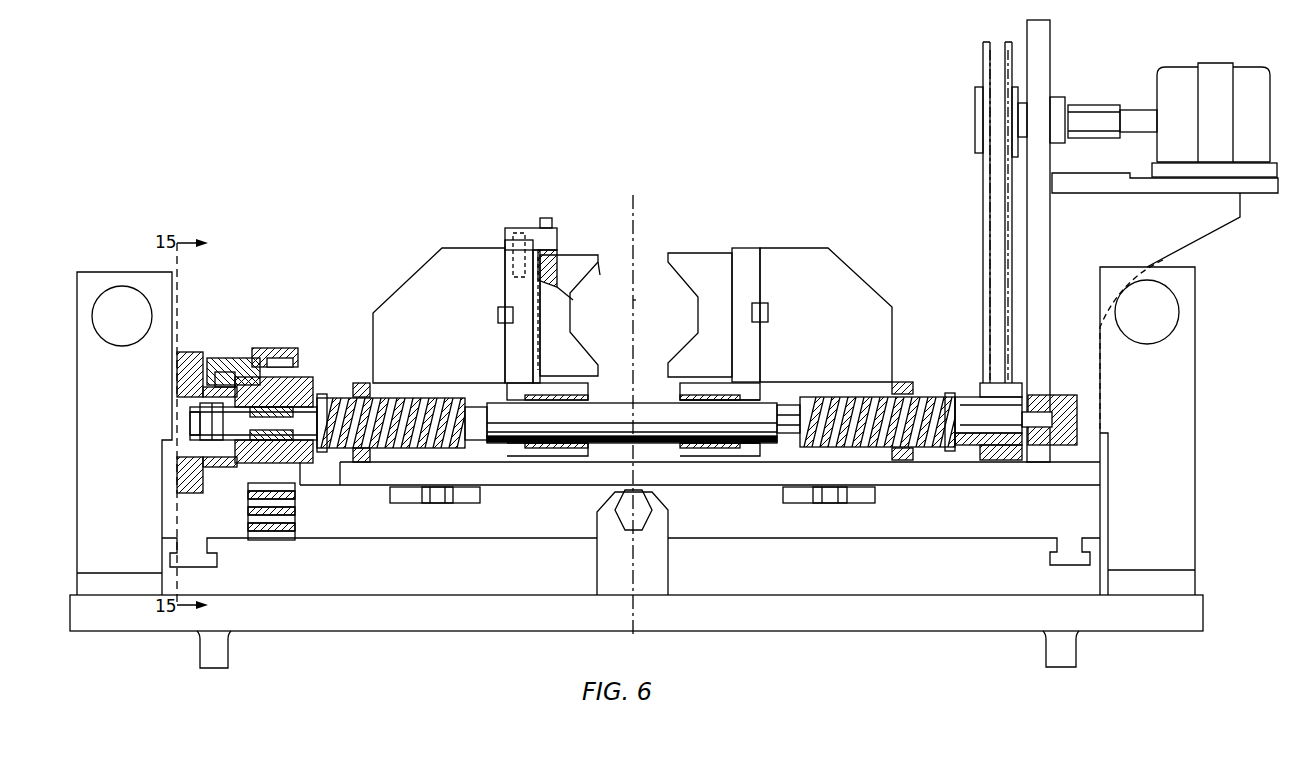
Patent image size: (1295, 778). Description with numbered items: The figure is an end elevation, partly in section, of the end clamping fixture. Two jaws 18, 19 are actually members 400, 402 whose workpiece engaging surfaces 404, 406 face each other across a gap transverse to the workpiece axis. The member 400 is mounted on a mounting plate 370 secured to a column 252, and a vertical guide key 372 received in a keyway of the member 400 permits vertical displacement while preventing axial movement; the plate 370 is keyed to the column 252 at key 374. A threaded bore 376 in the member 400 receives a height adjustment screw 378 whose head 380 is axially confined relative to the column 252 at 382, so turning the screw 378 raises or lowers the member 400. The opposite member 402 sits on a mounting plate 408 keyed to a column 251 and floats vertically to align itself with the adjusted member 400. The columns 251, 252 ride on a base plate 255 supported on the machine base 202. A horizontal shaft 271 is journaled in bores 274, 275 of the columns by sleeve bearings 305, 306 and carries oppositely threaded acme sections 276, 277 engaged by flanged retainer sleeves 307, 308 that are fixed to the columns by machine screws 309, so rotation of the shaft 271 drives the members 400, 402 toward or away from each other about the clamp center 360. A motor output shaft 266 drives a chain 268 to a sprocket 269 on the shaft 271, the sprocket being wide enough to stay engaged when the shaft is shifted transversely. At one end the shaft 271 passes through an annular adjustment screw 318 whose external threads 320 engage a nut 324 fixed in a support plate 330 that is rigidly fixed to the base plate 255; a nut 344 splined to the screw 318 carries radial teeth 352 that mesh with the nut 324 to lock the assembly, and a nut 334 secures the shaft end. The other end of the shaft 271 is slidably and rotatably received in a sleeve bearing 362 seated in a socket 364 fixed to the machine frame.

The jaw 18 is at (582, 342).
The jaw 19 is at (680, 336).
The base 202 is at (272, 565).
The column 251 is at (835, 323).
The column 252 is at (437, 321).
The base plate 255 is at (377, 522).
The output shaft 266 is at (975, 120).
The chain 268 is at (983, 180).
The sprocket 269 is at (983, 458).
The horizontal shaft 271 is at (766, 418).
The bore 274 is at (778, 400).
The bore 275 is at (495, 403).
The threaded section 276 is at (842, 397).
The threaded section 277 is at (452, 398).
The sleeve bearing 305 is at (718, 404).
The sleeve bearing 306 is at (578, 405).
The flanged retainer sleeve 307 is at (872, 396).
The flanged retainer sleeve 308 is at (430, 398).
The machine screws 309 is at (358, 383).
The adjustment screw 318 is at (226, 370).
The external threads 320 is at (285, 380).
The nut 324 is at (290, 485).
The support plate 330 is at (285, 350).
The nut 334 is at (200, 420).
The nut 344 is at (177, 467).
The radial teeth 352 is at (228, 362).
The clamp center 360 is at (635, 300).
The sleeve bearing 362 is at (1040, 395).
The socket 364 is at (1065, 396).
The mounting plate 370 is at (513, 362).
The vertical guide key 372 is at (535, 308).
The key 374 is at (498, 316).
The threaded bore 376 is at (557, 262).
The height adjustment screw 378 is at (573, 300).
The head 380 is at (549, 218).
The head confinement 382 is at (557, 236).
The member 400 is at (598, 262).
The member 402 is at (680, 258).
The workpiece engaging surface 404 is at (598, 278).
The workpiece engaging surface 406 is at (698, 305).
The mounting plate 408 is at (740, 254).